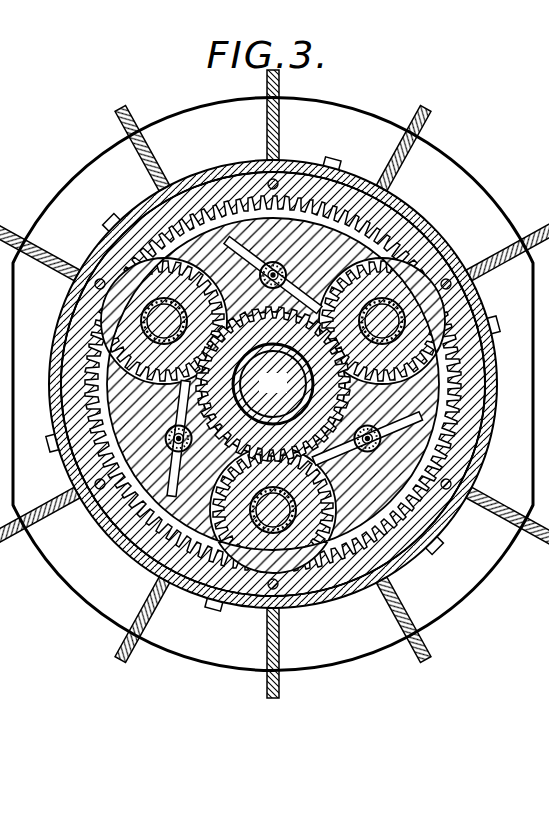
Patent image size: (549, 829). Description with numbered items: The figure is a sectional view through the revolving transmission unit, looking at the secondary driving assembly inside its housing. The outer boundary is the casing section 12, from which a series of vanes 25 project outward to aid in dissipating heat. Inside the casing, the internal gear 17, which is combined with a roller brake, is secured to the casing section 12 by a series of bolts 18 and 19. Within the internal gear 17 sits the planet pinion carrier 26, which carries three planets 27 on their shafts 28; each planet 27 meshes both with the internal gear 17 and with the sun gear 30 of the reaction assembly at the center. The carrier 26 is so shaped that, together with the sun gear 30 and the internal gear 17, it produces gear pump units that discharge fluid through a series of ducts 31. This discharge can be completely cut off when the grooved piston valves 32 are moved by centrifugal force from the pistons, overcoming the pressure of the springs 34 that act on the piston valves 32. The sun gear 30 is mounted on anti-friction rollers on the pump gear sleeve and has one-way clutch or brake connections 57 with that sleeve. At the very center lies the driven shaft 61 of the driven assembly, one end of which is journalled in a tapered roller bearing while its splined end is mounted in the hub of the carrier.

The casing section 12 is at (88, 545).
The internal gear 17 is at (370, 224).
The bolts 18 is at (340, 160).
The bolts 19 is at (91, 268).
The vanes 25 is at (280, 113).
The planet pinion carrier 26 is at (292, 232).
The planet 27 is at (408, 277).
The shafts 28 is at (185, 284).
The sun gear 30 is at (182, 492).
The ducts 31 is at (315, 290).
The grooved piston valves 32 is at (226, 243).
The springs 34 is at (271, 262).
The one-way clutch or brake connections 57 is at (257, 313).
The driven shaft 61 is at (273, 384).